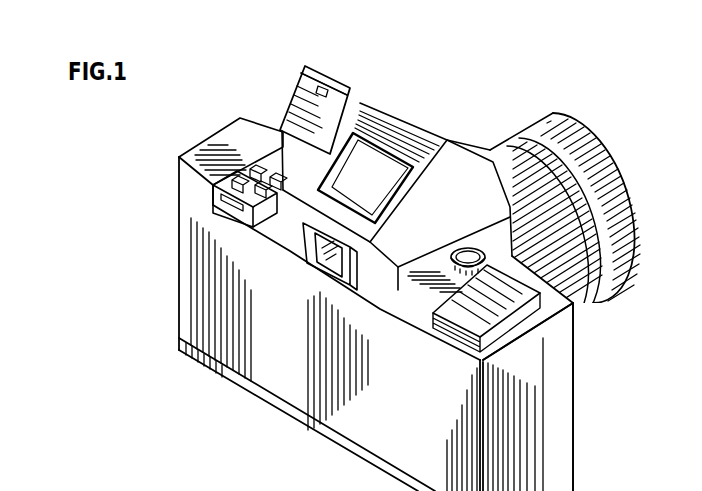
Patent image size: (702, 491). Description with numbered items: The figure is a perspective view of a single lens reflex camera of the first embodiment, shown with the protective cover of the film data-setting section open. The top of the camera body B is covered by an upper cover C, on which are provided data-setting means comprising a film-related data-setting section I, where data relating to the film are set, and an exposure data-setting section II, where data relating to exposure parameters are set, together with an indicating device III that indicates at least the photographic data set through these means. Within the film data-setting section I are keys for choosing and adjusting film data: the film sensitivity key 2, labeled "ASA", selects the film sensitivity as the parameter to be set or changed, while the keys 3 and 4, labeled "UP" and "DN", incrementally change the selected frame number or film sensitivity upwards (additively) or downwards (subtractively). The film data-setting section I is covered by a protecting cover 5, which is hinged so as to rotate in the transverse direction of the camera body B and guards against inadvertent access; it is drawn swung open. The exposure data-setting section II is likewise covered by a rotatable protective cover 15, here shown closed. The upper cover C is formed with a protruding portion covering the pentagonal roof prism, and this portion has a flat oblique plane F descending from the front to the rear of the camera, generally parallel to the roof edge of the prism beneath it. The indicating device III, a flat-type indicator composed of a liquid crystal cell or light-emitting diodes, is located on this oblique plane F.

The film sensitivity key 2 is at (267, 165).
The UP key 3 is at (228, 166).
The DN key 4 is at (250, 188).
The protecting cover 5 is at (305, 66).
The rotatable protective cover 15 is at (463, 315).
The film-related data-setting section I is at (337, 70).
The exposure data-setting section II is at (583, 298).
The indicating device III is at (386, 140).
The flat oblique plane F is at (417, 133).
The upper cover C is at (578, 312).
The camera body B is at (582, 377).